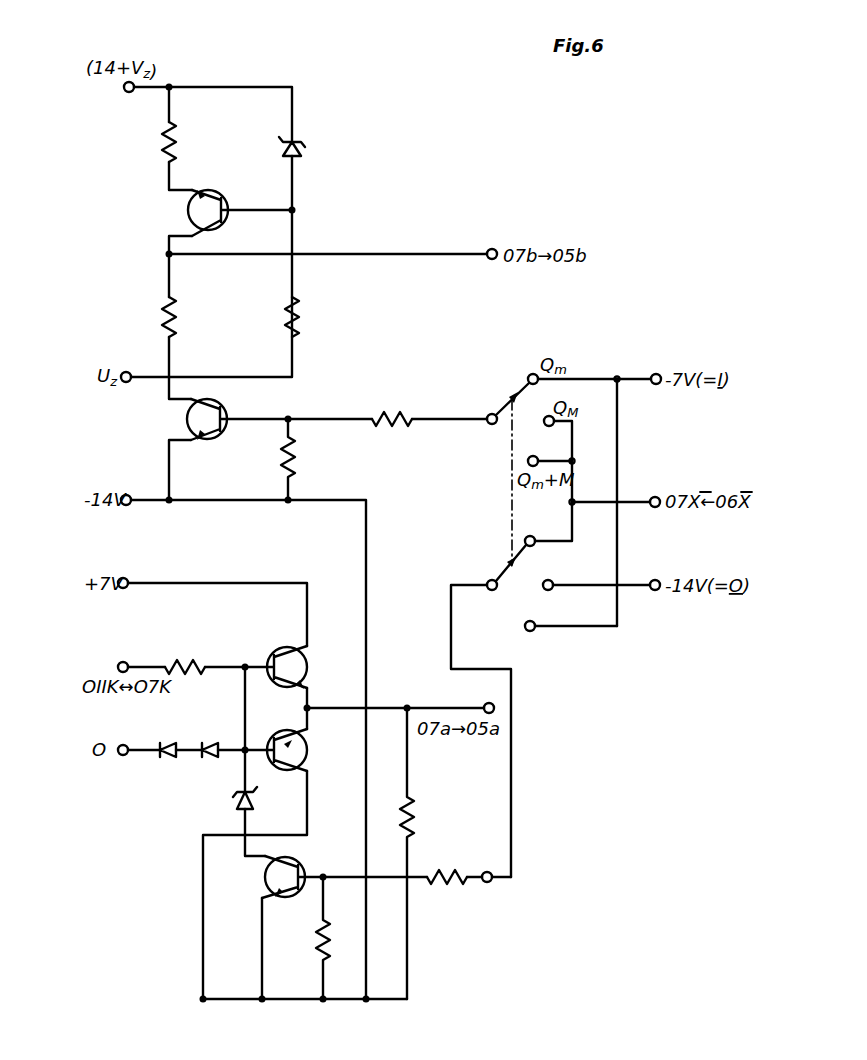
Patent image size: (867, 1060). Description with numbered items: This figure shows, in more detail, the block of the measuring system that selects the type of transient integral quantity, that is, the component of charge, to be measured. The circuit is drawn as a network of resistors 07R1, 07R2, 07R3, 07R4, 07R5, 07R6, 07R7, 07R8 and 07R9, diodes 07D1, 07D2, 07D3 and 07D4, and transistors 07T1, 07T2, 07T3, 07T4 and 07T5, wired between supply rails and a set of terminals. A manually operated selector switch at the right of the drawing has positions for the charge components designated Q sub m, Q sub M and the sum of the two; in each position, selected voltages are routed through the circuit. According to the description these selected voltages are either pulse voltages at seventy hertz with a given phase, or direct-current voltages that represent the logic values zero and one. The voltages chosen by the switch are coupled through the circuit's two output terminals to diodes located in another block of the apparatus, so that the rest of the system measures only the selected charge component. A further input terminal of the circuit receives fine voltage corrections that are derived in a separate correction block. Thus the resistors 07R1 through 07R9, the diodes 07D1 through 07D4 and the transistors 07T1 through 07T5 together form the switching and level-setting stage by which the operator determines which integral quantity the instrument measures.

The resistor 07R1 is at (195, 142).
The resistor 07R2 is at (318, 317).
The resistor 07R3 is at (195, 317).
The resistor 07R4 is at (393, 406).
The resistor 07R5 is at (314, 459).
The resistor 07R6 is at (187, 653).
The resistor 07R7 is at (433, 853).
The resistor 07R8 is at (450, 866).
The resistor 07R9 is at (299, 938).
The zener diode 07D1 is at (316, 145).
The diode 07D2 is at (154, 761).
The diode 07D3 is at (204, 735).
The zener diode 07D4 is at (217, 800).
The transistor 07T1 is at (188, 210).
The transistor 07T2 is at (187, 419).
The transistor 07T3 is at (312, 666).
The transistor 07T4 is at (312, 749).
The transistor 07T5 is at (265, 878).